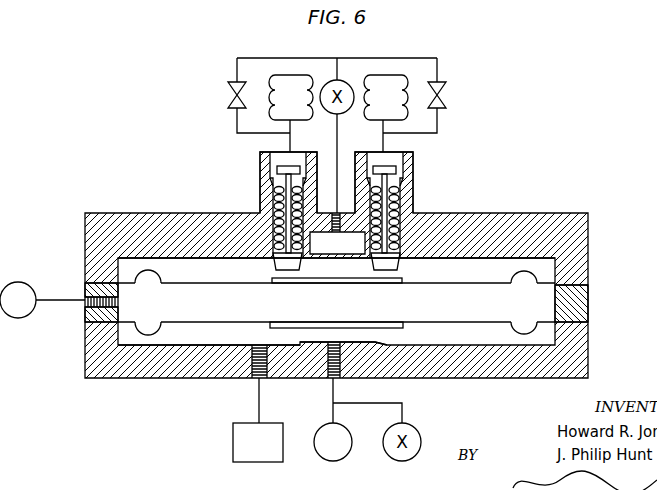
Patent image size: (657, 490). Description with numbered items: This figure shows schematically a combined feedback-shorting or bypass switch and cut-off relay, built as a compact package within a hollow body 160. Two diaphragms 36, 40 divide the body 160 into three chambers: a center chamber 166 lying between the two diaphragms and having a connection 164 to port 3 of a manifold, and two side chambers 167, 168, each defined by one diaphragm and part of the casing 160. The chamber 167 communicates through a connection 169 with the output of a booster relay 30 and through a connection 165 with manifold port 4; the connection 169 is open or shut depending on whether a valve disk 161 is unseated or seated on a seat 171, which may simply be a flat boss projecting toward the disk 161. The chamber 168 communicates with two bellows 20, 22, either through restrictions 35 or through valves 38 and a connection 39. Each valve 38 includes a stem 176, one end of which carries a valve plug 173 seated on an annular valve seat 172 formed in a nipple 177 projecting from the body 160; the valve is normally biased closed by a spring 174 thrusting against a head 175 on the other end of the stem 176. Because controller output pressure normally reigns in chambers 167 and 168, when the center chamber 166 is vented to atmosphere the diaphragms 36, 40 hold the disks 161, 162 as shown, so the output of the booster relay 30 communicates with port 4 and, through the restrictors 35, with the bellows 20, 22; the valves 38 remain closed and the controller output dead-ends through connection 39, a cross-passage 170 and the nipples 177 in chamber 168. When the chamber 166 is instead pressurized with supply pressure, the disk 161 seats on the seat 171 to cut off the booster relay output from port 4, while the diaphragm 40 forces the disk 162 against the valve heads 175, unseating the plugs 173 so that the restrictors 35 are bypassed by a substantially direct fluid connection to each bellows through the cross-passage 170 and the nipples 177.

The hollow body 160 is at (107, 213).
The valves 38 is at (260, 162).
The stem 176 is at (272, 182).
The spring 174 is at (276, 202).
The valve plug 173 is at (413, 163).
The annular valve seat 172 is at (413, 181).
The nipple 177 is at (363, 148).
The head 175 is at (398, 262).
The cross-passage 170 is at (337, 234).
The connection 39 is at (319, 163).
The bellows 20 is at (293, 75).
The bellows 22 is at (390, 77).
The restrictions 35 is at (218, 100).
The center chamber 166 is at (176, 309).
The side chamber 168 is at (183, 279).
The side chamber 167 is at (454, 342).
The disk 162 is at (350, 278).
The valve disk 161 is at (312, 328).
The diaphragm 40 is at (475, 285).
The diaphragm 36 is at (500, 322).
The connection 164 is at (85, 307).
The port 3 is at (42, 300).
The connection 169 is at (255, 378).
The connection 165 is at (340, 378).
The seat 171 is at (370, 338).
The booster relay 30 is at (258, 420).
The port 4 is at (358, 419).